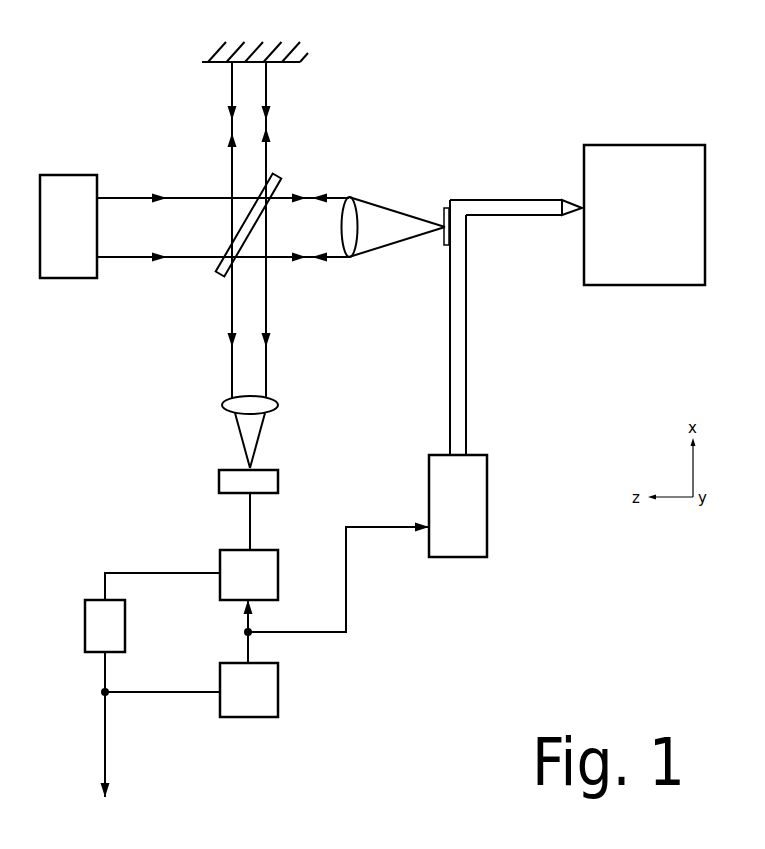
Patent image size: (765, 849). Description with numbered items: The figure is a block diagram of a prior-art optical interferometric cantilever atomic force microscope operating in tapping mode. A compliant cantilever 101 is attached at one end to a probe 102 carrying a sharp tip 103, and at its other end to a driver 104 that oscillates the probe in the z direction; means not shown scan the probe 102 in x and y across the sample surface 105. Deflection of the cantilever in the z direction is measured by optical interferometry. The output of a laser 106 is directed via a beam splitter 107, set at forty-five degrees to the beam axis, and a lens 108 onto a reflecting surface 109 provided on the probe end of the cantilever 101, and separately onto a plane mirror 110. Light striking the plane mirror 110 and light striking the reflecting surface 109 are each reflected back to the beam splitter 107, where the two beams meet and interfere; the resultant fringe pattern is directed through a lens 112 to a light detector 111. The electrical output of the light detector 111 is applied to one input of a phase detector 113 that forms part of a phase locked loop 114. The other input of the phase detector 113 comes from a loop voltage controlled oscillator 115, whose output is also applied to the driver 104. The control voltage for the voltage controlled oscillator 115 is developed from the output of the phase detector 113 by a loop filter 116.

The compliant cantilever 101 is at (458, 330).
The probe 102 is at (507, 200).
The sharp tip 103 is at (572, 200).
The driver 104 is at (458, 513).
The sample surface 105 is at (630, 268).
The laser 106 is at (63, 187).
The beam splitter 107 is at (215, 276).
The lens 108 is at (346, 197).
The reflecting surface 109 is at (443, 217).
The plane mirror 110 is at (297, 62).
The light detector 111 is at (240, 483).
The lens 112 is at (247, 407).
The phase detector 113 is at (238, 563).
The phase locked loop 114 is at (213, 653).
The voltage controlled oscillator 115 is at (247, 705).
The loop filter 116 is at (93, 623).